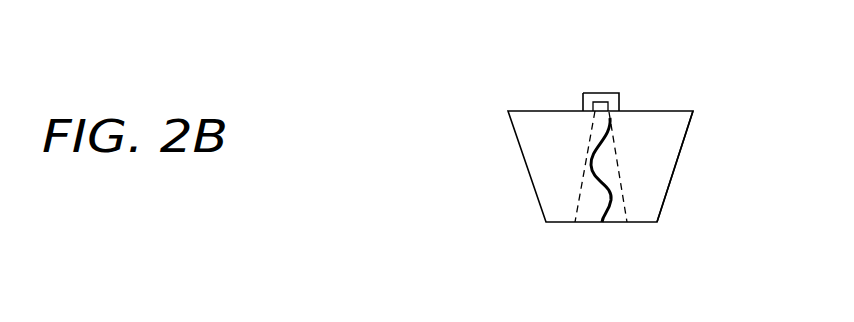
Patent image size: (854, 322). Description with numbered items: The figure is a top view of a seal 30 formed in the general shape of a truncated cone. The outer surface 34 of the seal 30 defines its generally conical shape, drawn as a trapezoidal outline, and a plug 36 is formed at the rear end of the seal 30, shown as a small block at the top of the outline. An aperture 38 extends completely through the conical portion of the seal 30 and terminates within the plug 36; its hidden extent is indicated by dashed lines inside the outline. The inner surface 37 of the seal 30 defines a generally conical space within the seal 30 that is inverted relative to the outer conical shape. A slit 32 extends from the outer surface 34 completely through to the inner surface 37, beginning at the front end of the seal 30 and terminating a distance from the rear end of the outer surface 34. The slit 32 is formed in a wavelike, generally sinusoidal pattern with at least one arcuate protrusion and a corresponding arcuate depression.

The seal 30 is at (466, 54).
The slit 32 is at (612, 128).
The outer surface 34 is at (664, 202).
The plug 36 is at (596, 93).
The inner surface 37 is at (578, 200).
The aperture 38 is at (618, 222).